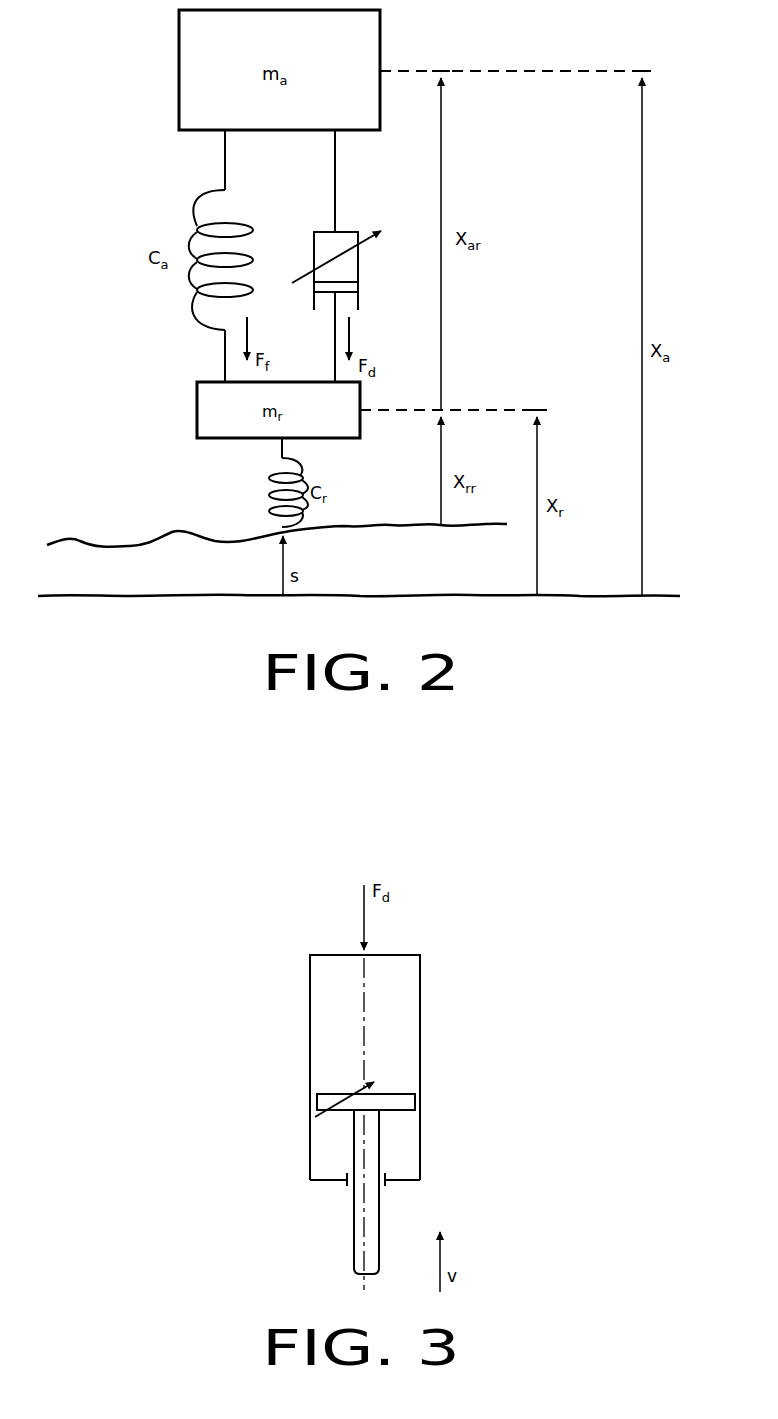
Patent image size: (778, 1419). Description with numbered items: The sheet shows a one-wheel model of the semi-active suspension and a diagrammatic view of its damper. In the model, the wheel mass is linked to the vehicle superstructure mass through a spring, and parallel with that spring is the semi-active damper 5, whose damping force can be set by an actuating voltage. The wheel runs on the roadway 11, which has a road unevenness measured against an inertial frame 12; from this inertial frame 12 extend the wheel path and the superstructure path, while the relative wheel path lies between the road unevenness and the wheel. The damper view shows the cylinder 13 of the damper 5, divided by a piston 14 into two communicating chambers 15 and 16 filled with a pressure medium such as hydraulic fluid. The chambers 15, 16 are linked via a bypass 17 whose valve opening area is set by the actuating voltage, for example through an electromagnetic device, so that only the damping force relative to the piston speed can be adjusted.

In FIG. 2, the damper 5 is at (320, 224).
In FIG. 3, the damper 5 is at (390, 1114).
In FIG. 2, the roadway 11 is at (72, 543).
In FIG. 2, the inertial frame 12 is at (110, 596).
In FIG. 3, the cylinder 13 is at (415, 1000).
In FIG. 3, the piston 14 is at (405, 1101).
In FIG. 3, the communicating chamber 15 is at (320, 1008).
In FIG. 3, the communicating chamber 16 is at (323, 1143).
In FIG. 3, the bypass 17 is at (335, 1088).